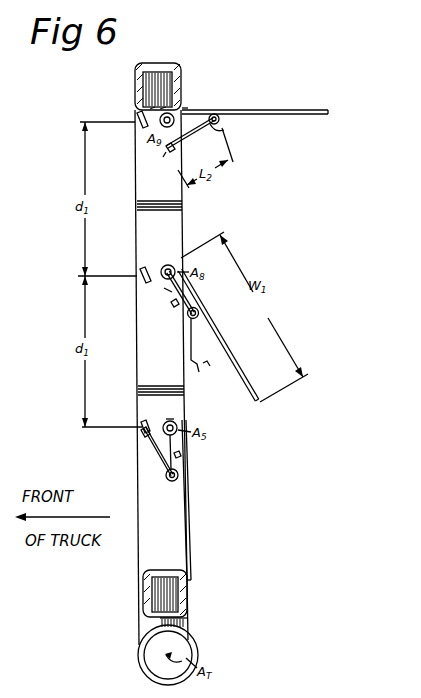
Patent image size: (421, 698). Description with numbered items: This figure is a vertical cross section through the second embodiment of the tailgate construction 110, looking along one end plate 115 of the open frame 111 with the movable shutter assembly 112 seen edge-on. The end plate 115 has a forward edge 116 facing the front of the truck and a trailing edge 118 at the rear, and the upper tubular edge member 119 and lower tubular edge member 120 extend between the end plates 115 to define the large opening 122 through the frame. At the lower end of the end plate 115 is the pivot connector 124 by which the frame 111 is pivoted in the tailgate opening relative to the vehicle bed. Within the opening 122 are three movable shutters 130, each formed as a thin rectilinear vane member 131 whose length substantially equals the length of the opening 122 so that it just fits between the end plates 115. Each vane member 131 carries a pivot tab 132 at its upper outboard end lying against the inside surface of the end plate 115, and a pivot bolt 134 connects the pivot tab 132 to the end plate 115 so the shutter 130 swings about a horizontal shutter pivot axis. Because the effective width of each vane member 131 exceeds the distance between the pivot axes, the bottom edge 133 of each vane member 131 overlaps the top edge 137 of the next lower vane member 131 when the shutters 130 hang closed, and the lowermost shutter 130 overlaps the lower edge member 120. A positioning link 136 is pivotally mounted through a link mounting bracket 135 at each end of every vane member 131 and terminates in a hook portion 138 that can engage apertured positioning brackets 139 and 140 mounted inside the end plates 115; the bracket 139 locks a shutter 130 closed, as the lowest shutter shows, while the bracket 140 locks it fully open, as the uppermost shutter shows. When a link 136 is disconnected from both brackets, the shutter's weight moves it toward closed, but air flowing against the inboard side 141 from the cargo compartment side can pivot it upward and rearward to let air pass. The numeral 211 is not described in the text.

The tailgate construction 110 is at (222, 48).
The open frame 111 is at (179, 63).
The movable shutter assembly 112 is at (313, 374).
The end plates 115 is at (186, 207).
The forward edge 116 is at (135, 183).
The trailing edge 118 is at (186, 211).
The upper tubular edge member 119 is at (164, 63).
The lower tubular edge member 120 is at (144, 599).
The opening 122 is at (158, 552).
The pivot connector 124 is at (195, 646).
The movable shutter 130 is at (264, 106).
The vane member 131 is at (263, 114).
The pivot tab 132 is at (187, 134).
The bottom edge 133 is at (328, 112).
The pivot bolt 134 is at (196, 104).
The roller 135 is at (222, 113).
The positioning link 136 is at (220, 128).
The top edge 137 is at (175, 258).
The hook portion 138 is at (176, 150).
The positioning bracket 139 is at (138, 122).
The positioning bracket 140 is at (165, 152).
The inboard side 141 is at (297, 114).
The direction indicator 211 is at (416, 670).